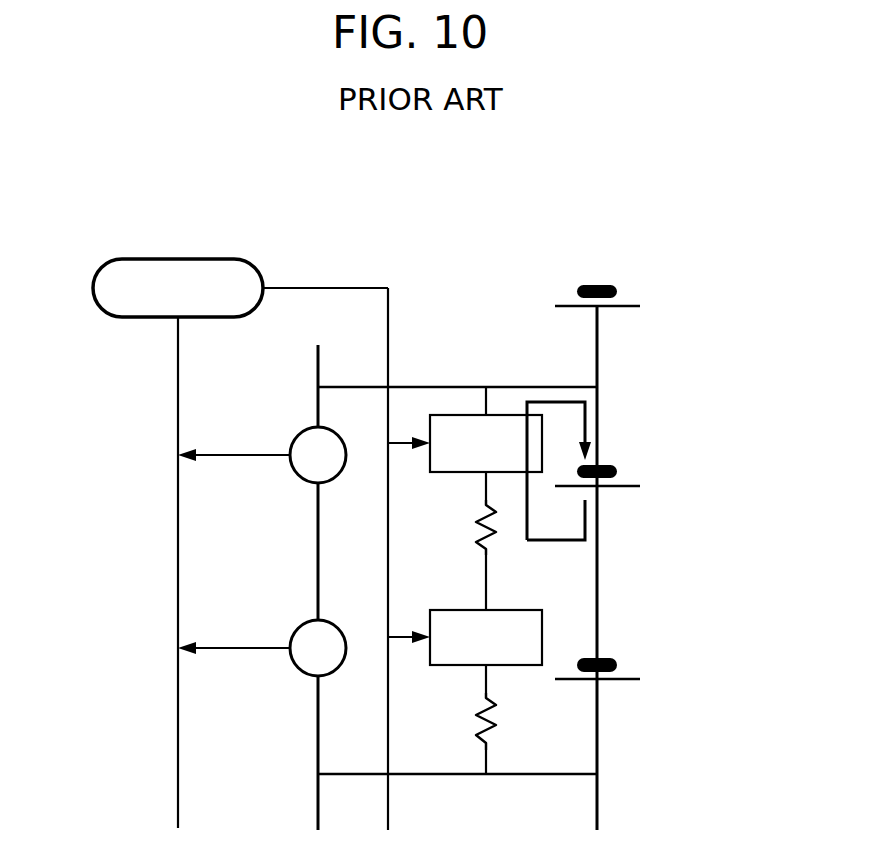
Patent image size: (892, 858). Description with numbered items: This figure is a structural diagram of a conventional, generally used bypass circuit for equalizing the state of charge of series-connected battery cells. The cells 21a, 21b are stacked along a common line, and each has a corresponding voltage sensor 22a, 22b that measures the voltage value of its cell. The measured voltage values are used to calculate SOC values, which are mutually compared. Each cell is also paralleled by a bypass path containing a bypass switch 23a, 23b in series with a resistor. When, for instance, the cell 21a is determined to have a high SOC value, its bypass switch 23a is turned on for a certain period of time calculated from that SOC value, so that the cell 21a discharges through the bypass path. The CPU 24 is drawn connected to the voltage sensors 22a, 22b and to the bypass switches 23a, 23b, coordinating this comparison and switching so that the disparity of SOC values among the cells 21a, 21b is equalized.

The CPU 24 is at (242, 258).
The voltage sensor 22a is at (305, 432).
The voltage sensor 22b is at (305, 625).
The bypass switch 23a is at (445, 474).
The bypass switch 23b is at (445, 667).
The cell 21a is at (625, 472).
The cell 21b is at (625, 665).